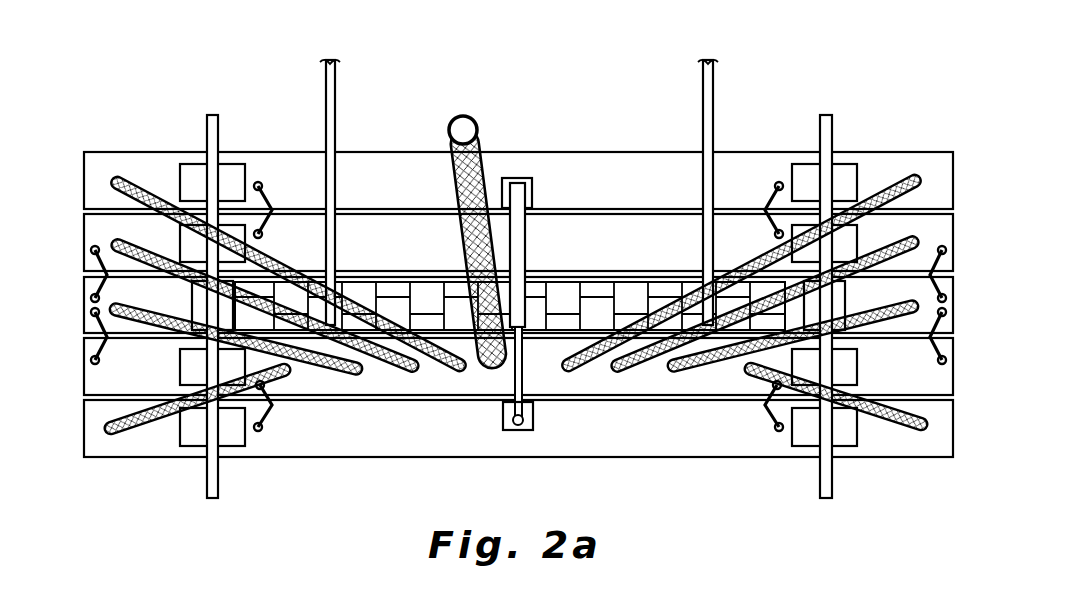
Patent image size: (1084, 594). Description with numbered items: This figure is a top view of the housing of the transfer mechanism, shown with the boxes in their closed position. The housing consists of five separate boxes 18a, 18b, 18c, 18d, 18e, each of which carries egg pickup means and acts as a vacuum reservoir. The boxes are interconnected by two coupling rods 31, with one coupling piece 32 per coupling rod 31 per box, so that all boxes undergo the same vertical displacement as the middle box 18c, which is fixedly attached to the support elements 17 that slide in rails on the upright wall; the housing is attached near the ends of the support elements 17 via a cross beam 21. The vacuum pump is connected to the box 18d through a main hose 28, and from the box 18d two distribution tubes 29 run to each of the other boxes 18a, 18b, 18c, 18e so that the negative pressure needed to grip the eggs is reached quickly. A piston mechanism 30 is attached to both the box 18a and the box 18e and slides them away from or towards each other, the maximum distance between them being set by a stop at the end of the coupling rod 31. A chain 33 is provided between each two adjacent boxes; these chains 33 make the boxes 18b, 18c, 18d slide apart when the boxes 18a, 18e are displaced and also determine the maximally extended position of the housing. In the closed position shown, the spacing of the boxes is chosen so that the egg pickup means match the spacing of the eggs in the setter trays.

The support element 17 is at (332, 86).
The box 18a is at (84, 183).
The box 18b is at (84, 245).
The box 18c is at (84, 307).
The box 18d is at (84, 365).
The box 18e is at (84, 430).
The cross beam 21 is at (560, 300).
The main hose 28 is at (478, 120).
The distribution tube 29 is at (138, 190).
The piston mechanism 30 is at (532, 150).
The coupling rod 31 is at (212, 140).
The coupling piece 32 is at (213, 428).
The chain 33 is at (778, 185).